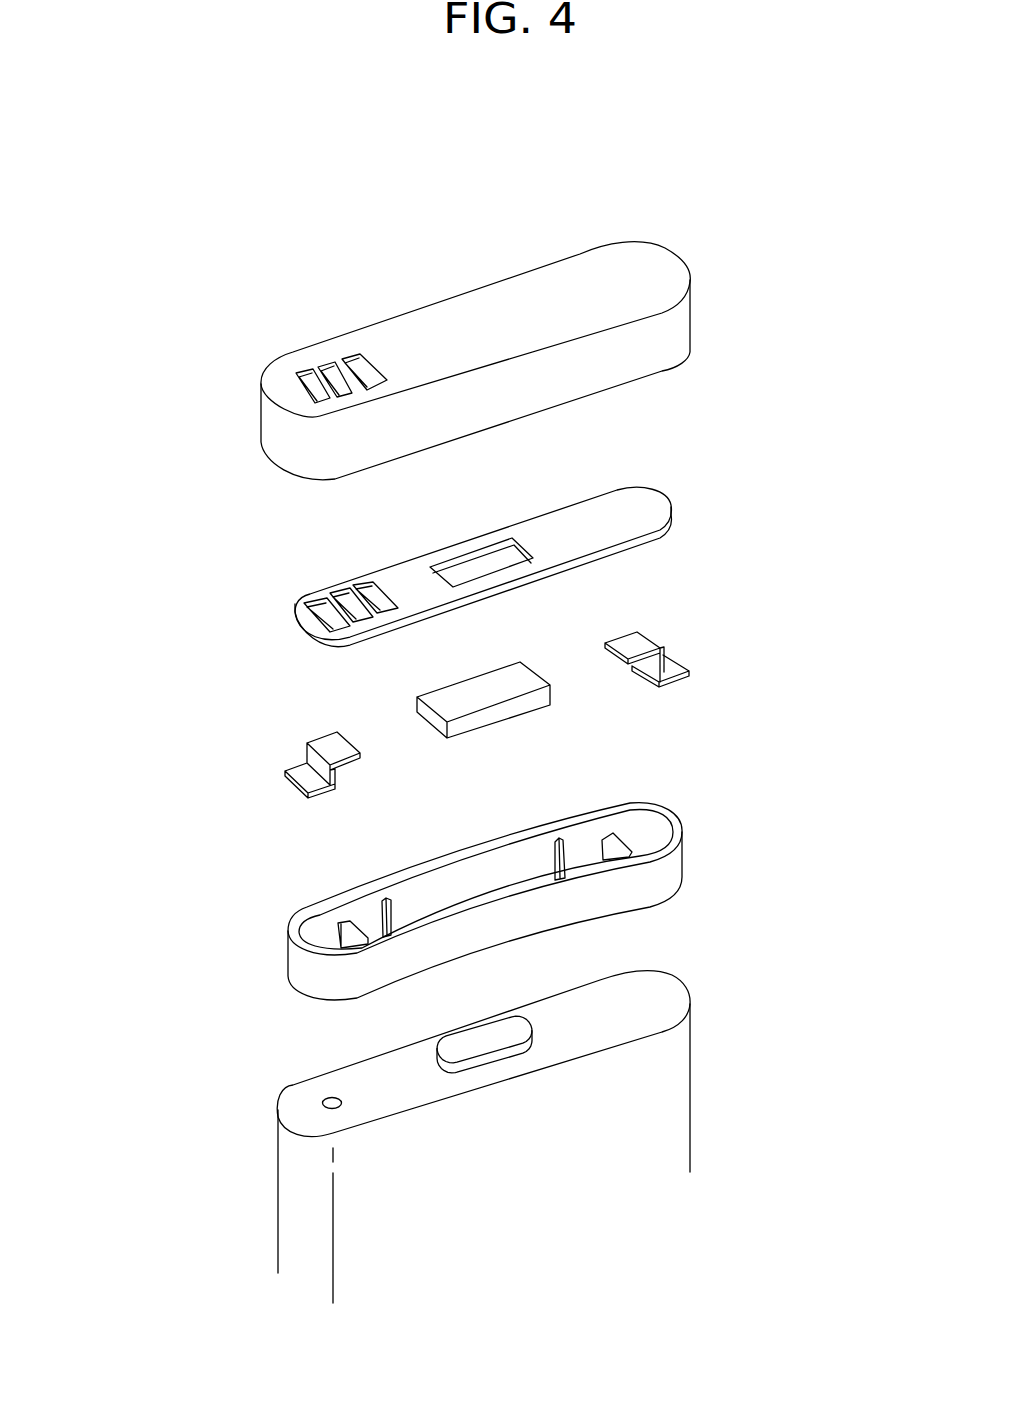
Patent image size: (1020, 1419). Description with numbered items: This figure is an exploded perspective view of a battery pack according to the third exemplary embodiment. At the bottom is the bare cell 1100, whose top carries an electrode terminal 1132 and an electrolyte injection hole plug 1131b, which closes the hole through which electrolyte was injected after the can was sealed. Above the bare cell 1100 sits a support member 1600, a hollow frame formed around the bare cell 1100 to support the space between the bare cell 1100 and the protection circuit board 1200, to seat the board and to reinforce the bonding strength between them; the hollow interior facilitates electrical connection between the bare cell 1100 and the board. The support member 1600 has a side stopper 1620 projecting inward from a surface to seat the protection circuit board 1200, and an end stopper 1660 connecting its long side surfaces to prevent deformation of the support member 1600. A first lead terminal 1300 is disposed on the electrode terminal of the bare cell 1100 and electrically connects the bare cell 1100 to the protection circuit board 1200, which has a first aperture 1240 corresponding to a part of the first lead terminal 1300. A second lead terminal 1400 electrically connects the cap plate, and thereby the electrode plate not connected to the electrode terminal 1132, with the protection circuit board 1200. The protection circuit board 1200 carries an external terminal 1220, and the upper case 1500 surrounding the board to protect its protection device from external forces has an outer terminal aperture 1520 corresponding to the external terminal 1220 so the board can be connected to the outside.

The bare cell 1100 is at (272, 1160).
The electrolyte injection hole plug 1131b is at (342, 1107).
The electrode terminal 1132 is at (490, 1048).
The protection circuit board 1200 is at (290, 610).
The external terminal 1220 is at (372, 593).
The first aperture 1240 is at (472, 565).
The first lead terminal 1300 is at (535, 658).
The second lead terminal 1400 is at (673, 637).
The upper case 1500 is at (447, 268).
The outer terminal aperture 1520 is at (362, 357).
The support member 1600 is at (677, 803).
The side stopper 1620 is at (572, 838).
The end stopper 1660 is at (340, 923).